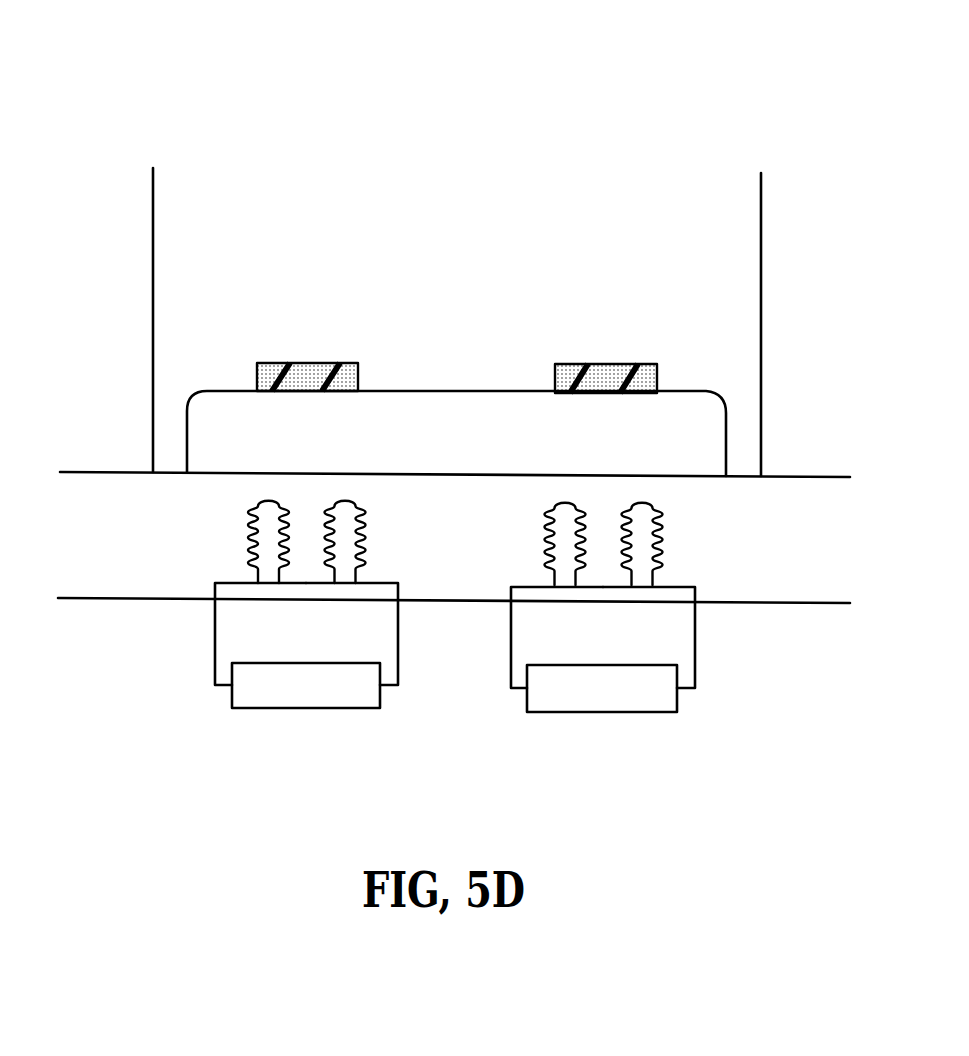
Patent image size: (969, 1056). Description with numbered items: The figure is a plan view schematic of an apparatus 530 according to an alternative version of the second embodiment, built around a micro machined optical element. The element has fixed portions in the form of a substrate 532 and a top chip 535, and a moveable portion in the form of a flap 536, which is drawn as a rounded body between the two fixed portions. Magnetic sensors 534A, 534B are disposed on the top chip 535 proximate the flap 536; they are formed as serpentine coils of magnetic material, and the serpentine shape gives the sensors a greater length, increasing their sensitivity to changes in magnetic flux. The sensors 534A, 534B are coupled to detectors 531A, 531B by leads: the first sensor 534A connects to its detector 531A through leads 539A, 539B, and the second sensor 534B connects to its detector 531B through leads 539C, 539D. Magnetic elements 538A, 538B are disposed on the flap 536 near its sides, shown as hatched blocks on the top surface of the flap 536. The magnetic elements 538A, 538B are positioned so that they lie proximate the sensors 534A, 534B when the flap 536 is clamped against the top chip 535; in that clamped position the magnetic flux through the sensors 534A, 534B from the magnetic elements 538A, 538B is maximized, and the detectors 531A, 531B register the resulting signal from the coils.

The apparatus 530 is at (710, 92).
The detector 531A is at (290, 708).
The detector 531B is at (615, 712).
The substrate 532 is at (835, 368).
The magnetic sensor 534A is at (248, 518).
The magnetic sensor 534B is at (662, 521).
The top chip 535 is at (128, 470).
The flap 536 is at (693, 392).
The magnetic element 538A is at (308, 362).
The magnetic element 538B is at (590, 363).
The lead 539A is at (215, 652).
The lead 539B is at (398, 644).
The lead 539C is at (511, 637).
The lead 539D is at (695, 640).